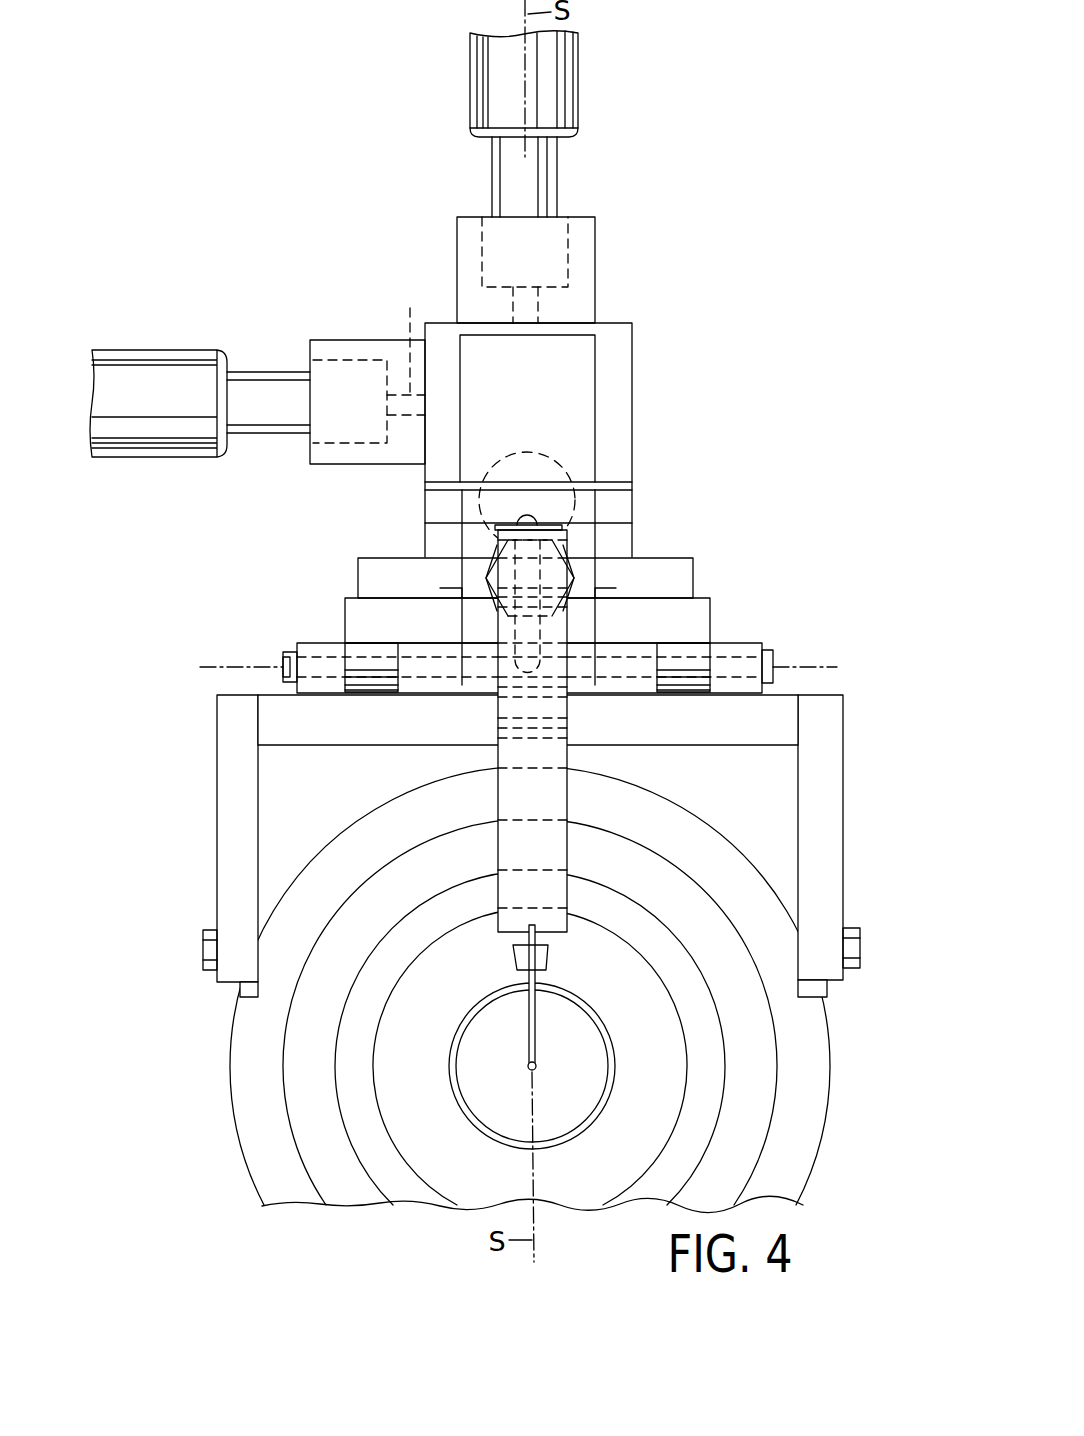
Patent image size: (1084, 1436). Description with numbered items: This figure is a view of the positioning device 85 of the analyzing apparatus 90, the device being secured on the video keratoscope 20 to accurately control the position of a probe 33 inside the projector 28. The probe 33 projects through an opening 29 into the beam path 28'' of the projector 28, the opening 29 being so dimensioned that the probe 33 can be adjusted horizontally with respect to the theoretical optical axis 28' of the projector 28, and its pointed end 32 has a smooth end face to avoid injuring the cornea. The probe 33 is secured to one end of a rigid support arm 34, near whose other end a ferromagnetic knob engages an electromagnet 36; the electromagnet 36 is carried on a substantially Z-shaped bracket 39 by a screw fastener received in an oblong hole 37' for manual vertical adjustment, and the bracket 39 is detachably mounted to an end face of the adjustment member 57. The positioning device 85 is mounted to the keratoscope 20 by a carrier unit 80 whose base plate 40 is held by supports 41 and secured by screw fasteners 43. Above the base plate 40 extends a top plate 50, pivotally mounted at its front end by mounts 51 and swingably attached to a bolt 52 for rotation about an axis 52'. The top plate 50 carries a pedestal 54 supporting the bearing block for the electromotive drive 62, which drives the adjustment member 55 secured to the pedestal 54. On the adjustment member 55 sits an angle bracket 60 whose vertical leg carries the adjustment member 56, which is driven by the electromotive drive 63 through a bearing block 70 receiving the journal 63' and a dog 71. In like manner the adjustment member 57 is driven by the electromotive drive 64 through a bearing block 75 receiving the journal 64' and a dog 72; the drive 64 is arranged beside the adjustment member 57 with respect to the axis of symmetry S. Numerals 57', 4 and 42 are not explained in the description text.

The analyzing apparatus 90 is at (190, 171).
The positioning device 85 is at (801, 256).
The carrier unit 80 is at (256, 532).
The electromotive drive 63 is at (560, 84).
The journal of the electromotive drive 63' is at (566, 177).
The bearing block 70 is at (455, 232).
The dog 71 is at (537, 307).
The dog 72 is at (410, 348).
The bearing block 75 is at (330, 340).
The electromotive drive 64 is at (158, 377).
The journal of the electromotive drive 64' is at (268, 371).
The adjustment member 56 is at (641, 386).
The adjustment member 57 is at (528, 486).
The carriage wall 57' is at (587, 402).
The angle bracket 60 is at (642, 433).
The adjustment member 55 is at (636, 503).
The bracket 39 is at (456, 442).
The electromotive drive 62 is at (545, 459).
The oblong hole 37' is at (507, 472).
The electromagnet 36 is at (590, 566).
The direction of adjustment 4 is at (748, 601).
The pedestal 54 is at (374, 572).
The top plate 50 is at (413, 633).
The adjusting screw 42 is at (325, 645).
The bolt 52 is at (529, 720).
The axis 52' is at (518, 638).
The mounts 51 is at (384, 669).
The base plate 40 is at (444, 730).
The supports 41 is at (232, 788).
The screw fasteners 43 is at (203, 952).
The support arm 34 is at (510, 796).
The opening 29 is at (514, 958).
The probe 33 is at (536, 1043).
The pointed end 32 is at (529, 1069).
The projector 28 is at (530, 985).
The theoretical optical axis 28' is at (512, 1066).
The beam path 28'' is at (559, 1066).
The video keratoscope 20 is at (213, 1105).